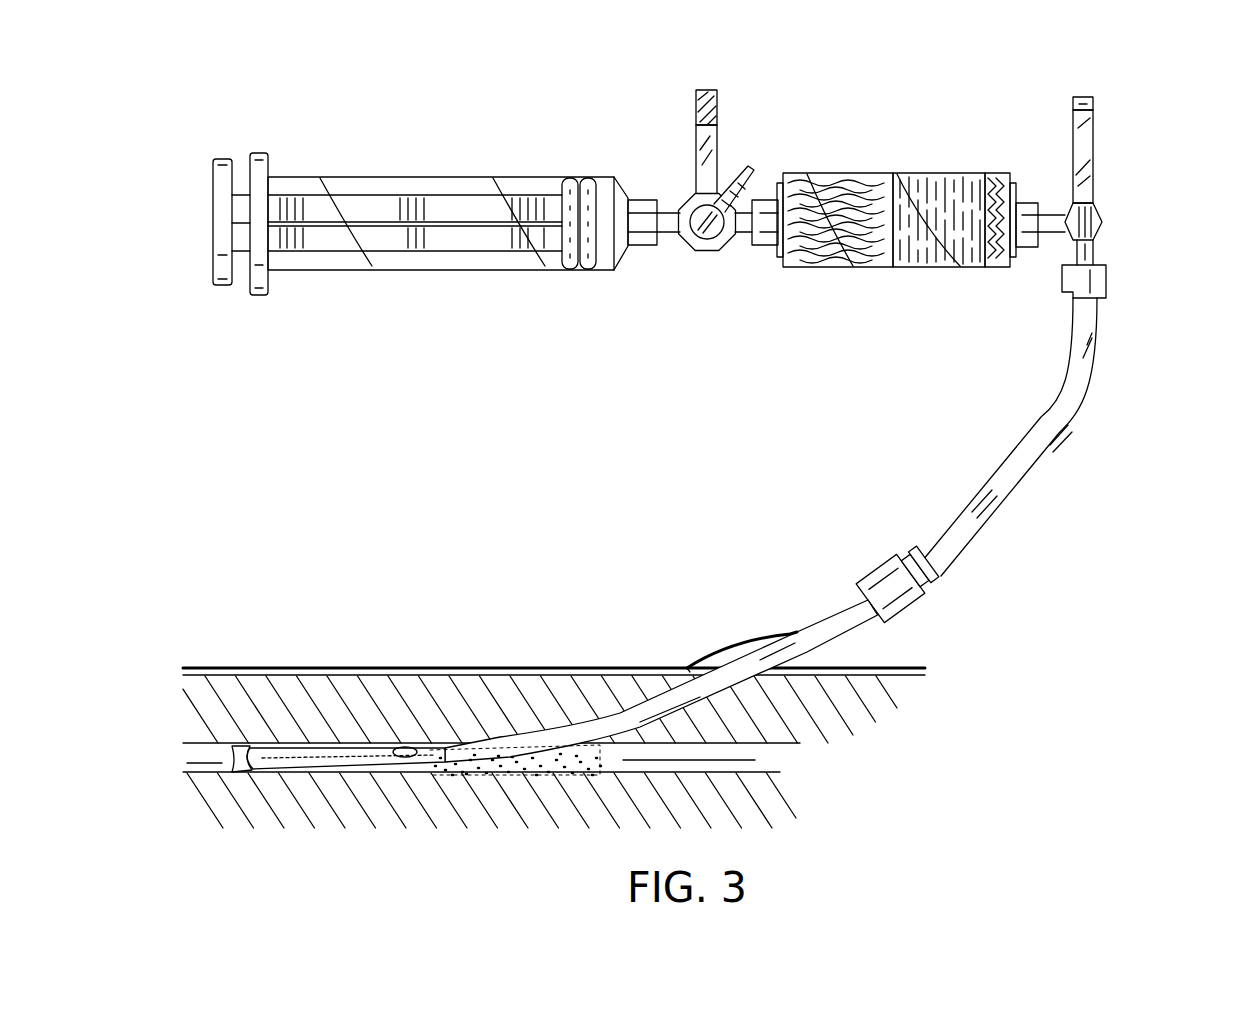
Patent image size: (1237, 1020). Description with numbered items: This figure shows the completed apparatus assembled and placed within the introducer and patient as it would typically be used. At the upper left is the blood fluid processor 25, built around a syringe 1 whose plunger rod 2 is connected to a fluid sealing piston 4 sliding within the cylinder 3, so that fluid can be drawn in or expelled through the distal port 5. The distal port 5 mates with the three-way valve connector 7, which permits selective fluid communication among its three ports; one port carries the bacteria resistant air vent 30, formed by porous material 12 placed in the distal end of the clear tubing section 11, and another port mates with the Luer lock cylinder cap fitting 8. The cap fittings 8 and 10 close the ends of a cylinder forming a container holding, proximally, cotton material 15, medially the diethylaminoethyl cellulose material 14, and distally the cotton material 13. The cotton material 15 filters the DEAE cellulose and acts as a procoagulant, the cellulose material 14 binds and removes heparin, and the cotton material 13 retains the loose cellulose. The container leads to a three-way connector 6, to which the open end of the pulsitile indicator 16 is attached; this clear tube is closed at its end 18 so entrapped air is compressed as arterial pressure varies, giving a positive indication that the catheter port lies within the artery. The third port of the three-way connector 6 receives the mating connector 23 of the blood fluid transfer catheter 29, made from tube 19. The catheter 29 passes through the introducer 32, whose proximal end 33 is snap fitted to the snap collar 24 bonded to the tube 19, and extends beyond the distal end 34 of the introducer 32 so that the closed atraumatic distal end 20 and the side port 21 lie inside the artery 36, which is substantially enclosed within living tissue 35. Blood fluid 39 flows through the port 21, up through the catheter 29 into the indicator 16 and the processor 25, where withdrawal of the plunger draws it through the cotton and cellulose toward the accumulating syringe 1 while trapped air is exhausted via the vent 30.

The syringe 1 is at (374, 172).
The plunger rod 2 is at (330, 245).
The cylinder 3 is at (447, 271).
The fluid sealing piston 4 is at (567, 176).
The distal port 5 is at (646, 249).
The three-way connector 6 is at (1104, 222).
The three-way valve connector 7 is at (708, 251).
The Luer lock cylinder cap fitting 8 is at (768, 262).
The Luer lock cylinder cap fitting 10 is at (1031, 204).
The tubing section 11 is at (699, 150).
The porous material 12 is at (720, 95).
The cotton material 13 is at (1004, 266).
The diethylaminoethyl cellulose material 14 is at (935, 186).
The cotton material 15 is at (880, 263).
The pulsitile indicator 16 is at (1094, 140).
The closed end 18 is at (1093, 100).
The tube 19 is at (316, 744).
The distal end 20 is at (250, 777).
The port 21 is at (405, 759).
The mating connector 23 is at (1108, 282).
The snap collar 24 is at (925, 554).
The blood fluid processor 25 is at (452, 99).
The blood fluid transfer catheter 29 is at (1070, 430).
The bacteria resistant air vent 30 is at (726, 137).
The introducer 32 is at (852, 578).
The proximal end 33 is at (939, 596).
The distal end 34 is at (622, 715).
The living tissue 35 is at (357, 667).
The artery 36 is at (207, 773).
The blood fluid 39 is at (540, 776).